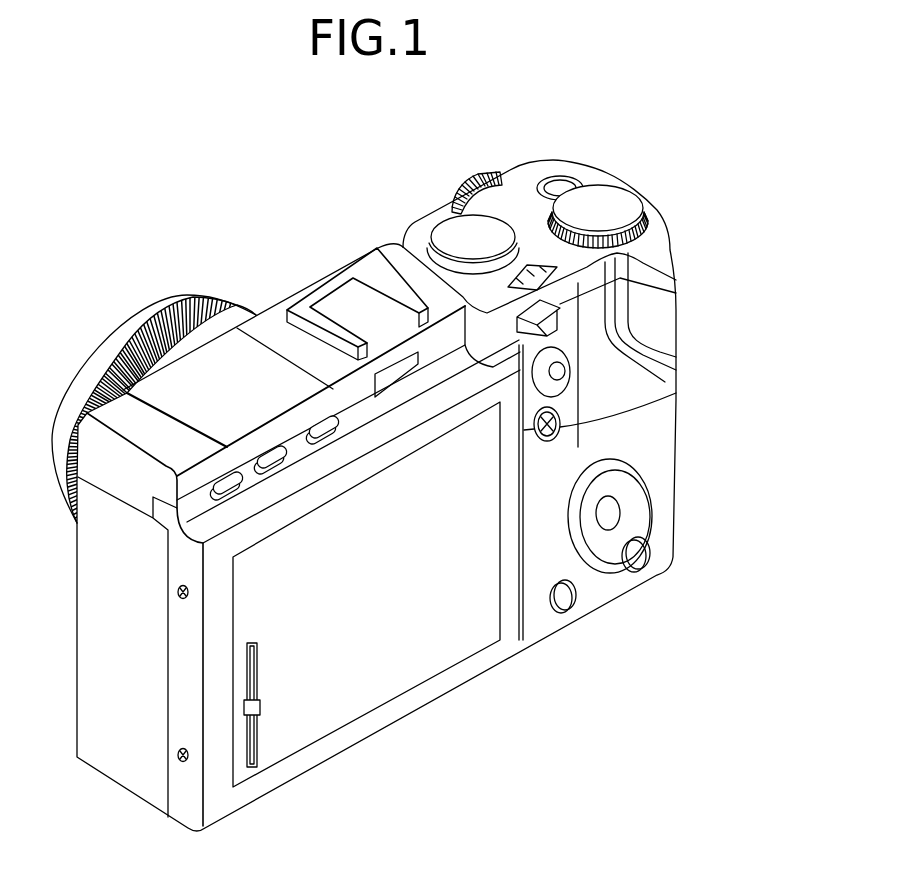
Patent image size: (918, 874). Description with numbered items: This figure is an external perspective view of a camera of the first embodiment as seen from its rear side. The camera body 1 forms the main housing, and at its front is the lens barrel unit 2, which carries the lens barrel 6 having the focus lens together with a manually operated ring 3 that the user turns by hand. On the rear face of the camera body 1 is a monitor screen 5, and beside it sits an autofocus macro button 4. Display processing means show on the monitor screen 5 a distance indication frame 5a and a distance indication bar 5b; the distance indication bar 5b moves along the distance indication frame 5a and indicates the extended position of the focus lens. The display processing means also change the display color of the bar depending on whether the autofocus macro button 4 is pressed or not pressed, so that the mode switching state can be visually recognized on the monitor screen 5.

The camera body 1 is at (632, 432).
The lens barrel unit 2 is at (243, 313).
The manually operated ring 3 is at (193, 312).
The autofocus macro button 4 is at (561, 428).
The monitor screen 5 is at (413, 657).
The distance indication frame 5a is at (257, 653).
The distance indication bar 5b is at (259, 702).
The lens barrel 6 is at (135, 322).